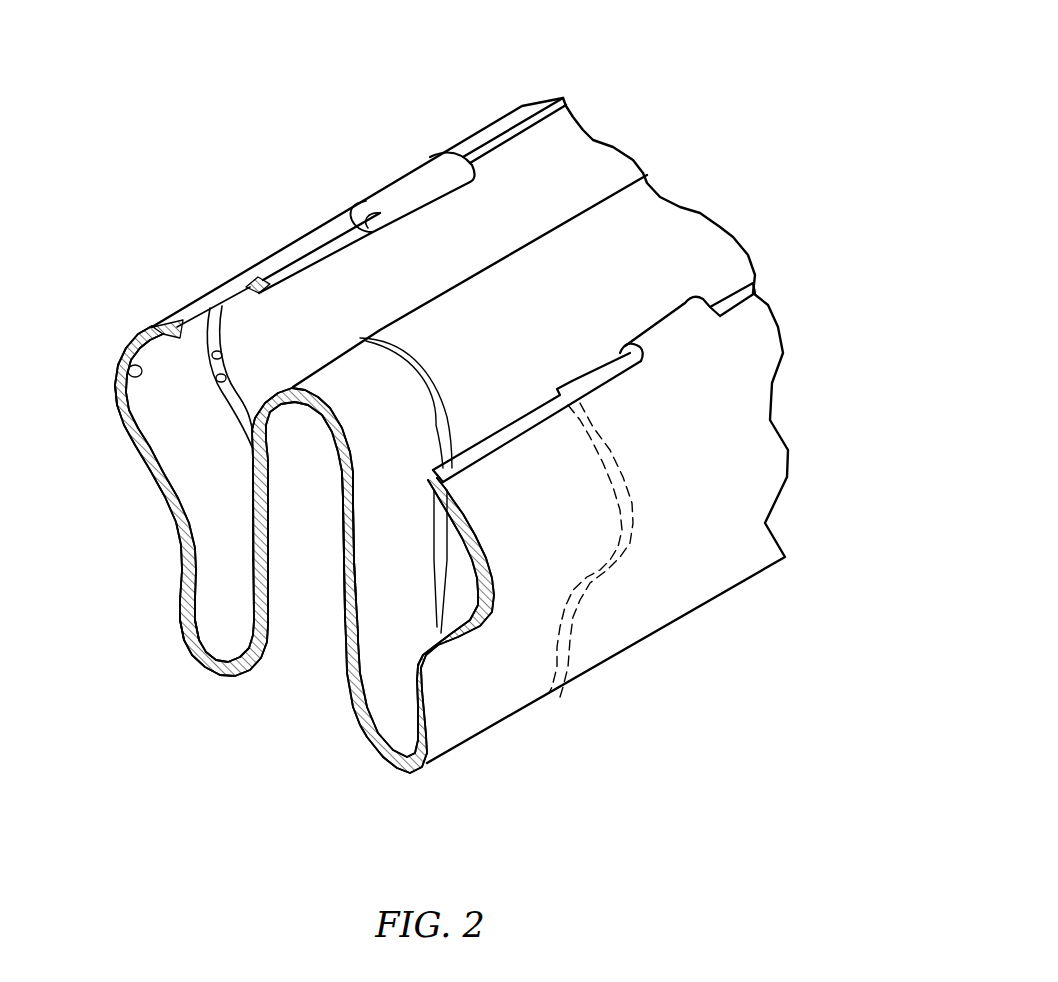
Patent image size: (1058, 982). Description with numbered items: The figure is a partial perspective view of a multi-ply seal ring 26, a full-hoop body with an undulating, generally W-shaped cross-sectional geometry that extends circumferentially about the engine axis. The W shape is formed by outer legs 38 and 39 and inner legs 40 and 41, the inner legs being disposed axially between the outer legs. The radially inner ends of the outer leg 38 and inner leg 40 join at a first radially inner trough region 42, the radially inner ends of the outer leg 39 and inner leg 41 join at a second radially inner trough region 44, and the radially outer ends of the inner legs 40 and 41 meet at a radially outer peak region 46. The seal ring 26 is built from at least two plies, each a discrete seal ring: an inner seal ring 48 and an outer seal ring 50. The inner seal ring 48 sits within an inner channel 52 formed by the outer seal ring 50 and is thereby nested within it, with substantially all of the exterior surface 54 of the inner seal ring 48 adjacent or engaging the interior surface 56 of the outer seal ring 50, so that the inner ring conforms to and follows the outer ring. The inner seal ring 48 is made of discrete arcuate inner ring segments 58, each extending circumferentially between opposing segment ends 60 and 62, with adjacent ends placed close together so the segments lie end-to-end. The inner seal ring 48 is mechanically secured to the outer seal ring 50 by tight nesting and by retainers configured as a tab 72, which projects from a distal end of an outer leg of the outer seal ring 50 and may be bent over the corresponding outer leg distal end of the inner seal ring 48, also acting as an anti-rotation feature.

The multi-ply seal ring 26 is at (735, 80).
The outer leg 38 is at (145, 492).
The outer leg 39 is at (448, 709).
The inner leg 40 is at (275, 632).
The inner leg 41 is at (340, 660).
The first radially inner trough region 42 is at (228, 682).
The second radially inner trough region 44 is at (414, 790).
The radially outer peak region 46 is at (305, 379).
The inner seal ring 48 is at (182, 593).
The outer seal ring 50 is at (177, 567).
The inner channel 52 is at (572, 158).
The exterior surface 54 is at (115, 383).
The interior surface 56 is at (117, 359).
The inner ring segment 58 is at (597, 373).
The segment end 60 is at (222, 390).
The segment end 62 is at (226, 366).
The tab 72 is at (412, 183).